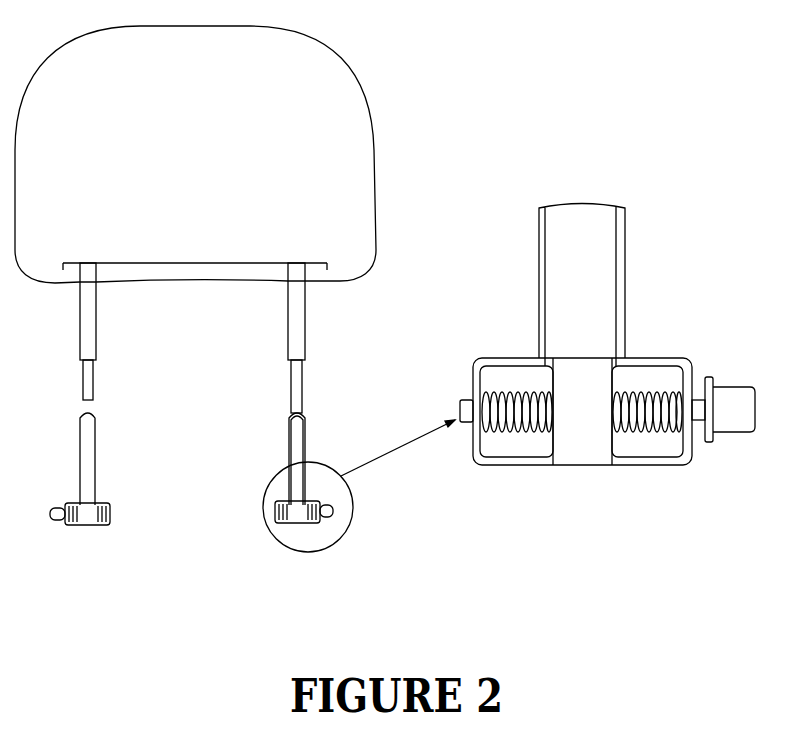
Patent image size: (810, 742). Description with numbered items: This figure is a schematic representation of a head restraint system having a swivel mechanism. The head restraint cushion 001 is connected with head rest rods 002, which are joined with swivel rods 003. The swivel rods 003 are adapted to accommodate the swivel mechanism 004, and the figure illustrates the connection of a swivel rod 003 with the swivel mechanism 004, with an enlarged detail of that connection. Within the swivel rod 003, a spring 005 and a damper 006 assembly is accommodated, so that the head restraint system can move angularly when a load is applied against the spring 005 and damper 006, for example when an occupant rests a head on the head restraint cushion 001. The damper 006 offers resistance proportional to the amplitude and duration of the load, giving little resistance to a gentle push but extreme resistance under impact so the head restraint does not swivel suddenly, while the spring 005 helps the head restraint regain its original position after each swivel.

The head restraint cushion 001 is at (342, 95).
The head rest rod 002 is at (298, 314).
The swivel rod 003 is at (292, 446).
The swivel mechanism 004 is at (264, 500).
The spring 005 is at (667, 428).
The damper 006 is at (740, 403).